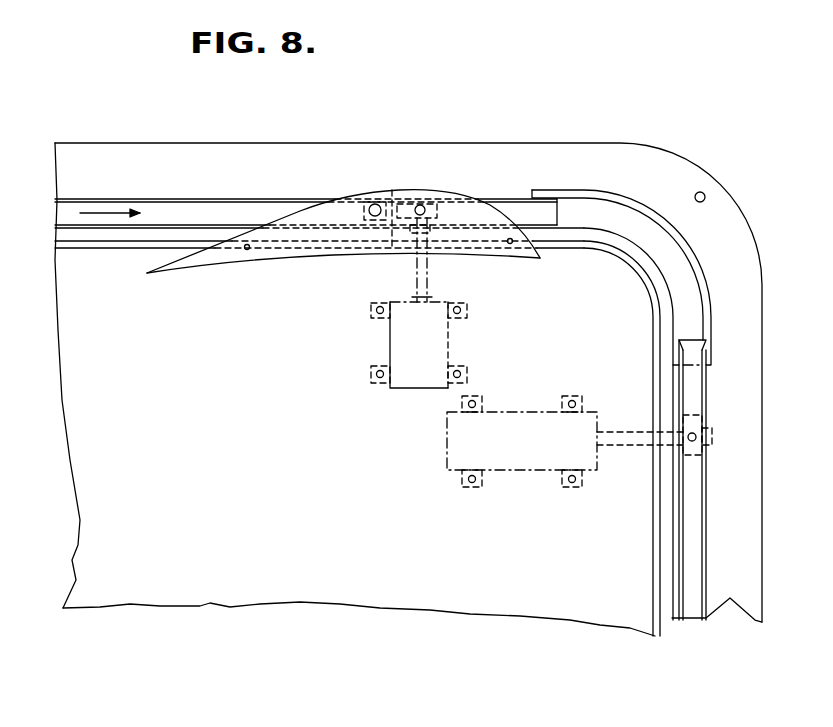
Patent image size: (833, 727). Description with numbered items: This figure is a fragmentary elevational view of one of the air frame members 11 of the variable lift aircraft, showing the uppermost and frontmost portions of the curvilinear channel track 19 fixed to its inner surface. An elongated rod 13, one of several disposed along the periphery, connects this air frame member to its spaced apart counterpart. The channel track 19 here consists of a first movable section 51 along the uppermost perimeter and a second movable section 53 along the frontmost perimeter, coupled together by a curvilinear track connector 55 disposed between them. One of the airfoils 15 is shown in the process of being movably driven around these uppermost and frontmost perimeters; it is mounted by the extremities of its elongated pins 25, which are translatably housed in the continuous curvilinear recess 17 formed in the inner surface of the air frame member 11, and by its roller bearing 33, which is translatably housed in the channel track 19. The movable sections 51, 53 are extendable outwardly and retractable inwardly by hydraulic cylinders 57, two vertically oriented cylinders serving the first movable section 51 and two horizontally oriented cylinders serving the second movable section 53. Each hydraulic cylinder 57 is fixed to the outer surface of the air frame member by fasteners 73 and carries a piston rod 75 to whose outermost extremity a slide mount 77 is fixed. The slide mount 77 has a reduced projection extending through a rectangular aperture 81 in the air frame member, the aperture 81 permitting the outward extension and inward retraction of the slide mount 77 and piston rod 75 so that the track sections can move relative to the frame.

The air frame member 11 is at (733, 190).
The elongated rod 13 is at (695, 196).
The airfoil 15 is at (263, 222).
The curvilinear recess 17 is at (655, 540).
The curvilinear channel track 19 is at (708, 547).
The elongated pin 25 is at (247, 250).
The roller bearing 33 is at (368, 203).
The first movable section 51 is at (187, 212).
The second movable section 53 is at (706, 575).
The track connector 55 is at (737, 283).
The hydraulic cylinder 57 is at (390, 330).
The fastener 73 is at (460, 326).
The piston rod 75 is at (432, 283).
The slide mount 77 is at (462, 204).
The rectangular aperture 81 is at (420, 196).